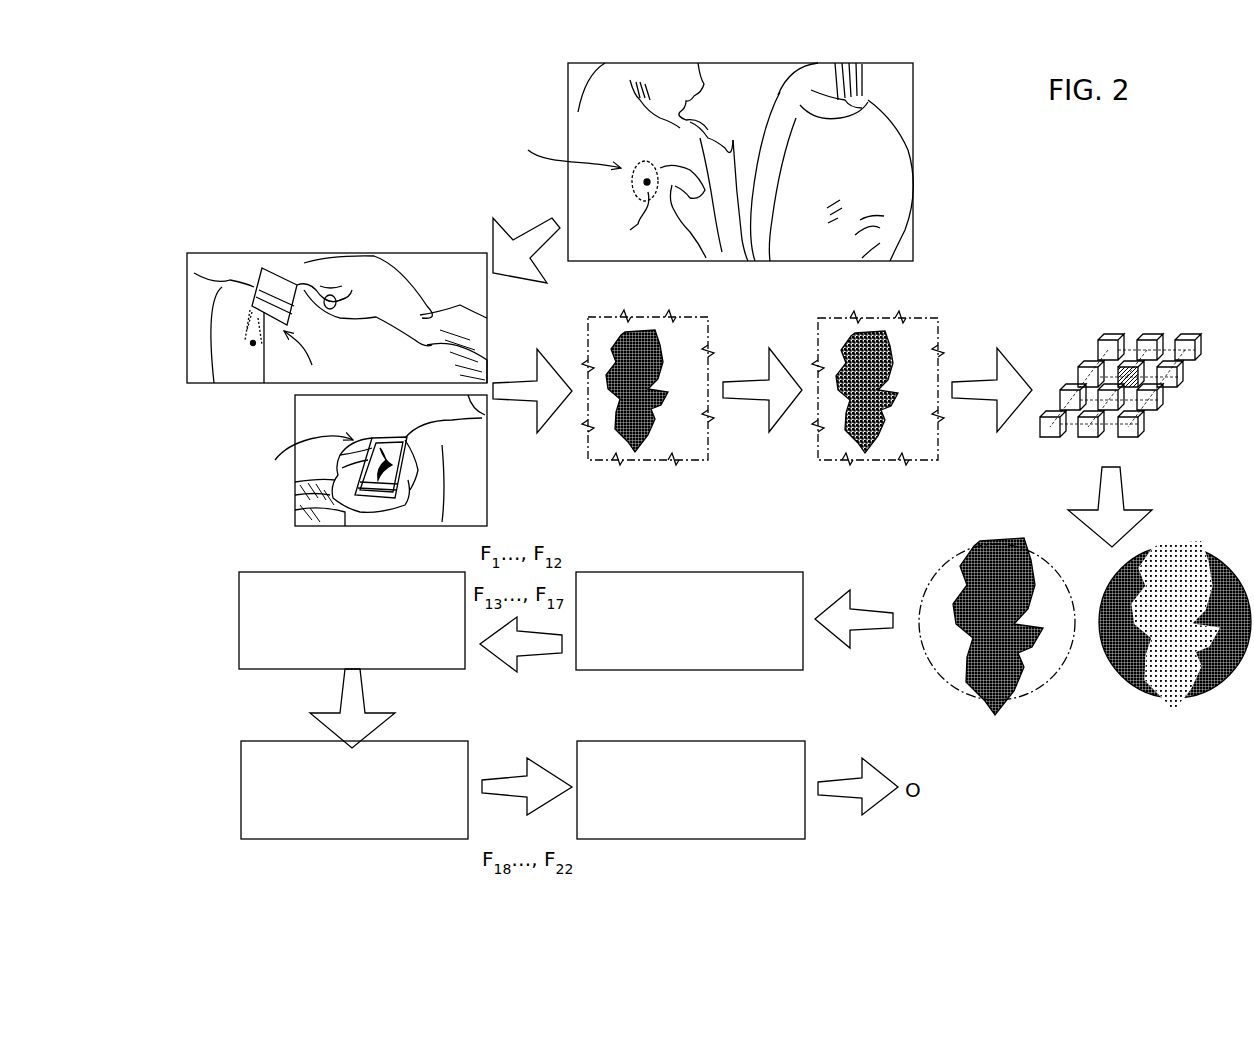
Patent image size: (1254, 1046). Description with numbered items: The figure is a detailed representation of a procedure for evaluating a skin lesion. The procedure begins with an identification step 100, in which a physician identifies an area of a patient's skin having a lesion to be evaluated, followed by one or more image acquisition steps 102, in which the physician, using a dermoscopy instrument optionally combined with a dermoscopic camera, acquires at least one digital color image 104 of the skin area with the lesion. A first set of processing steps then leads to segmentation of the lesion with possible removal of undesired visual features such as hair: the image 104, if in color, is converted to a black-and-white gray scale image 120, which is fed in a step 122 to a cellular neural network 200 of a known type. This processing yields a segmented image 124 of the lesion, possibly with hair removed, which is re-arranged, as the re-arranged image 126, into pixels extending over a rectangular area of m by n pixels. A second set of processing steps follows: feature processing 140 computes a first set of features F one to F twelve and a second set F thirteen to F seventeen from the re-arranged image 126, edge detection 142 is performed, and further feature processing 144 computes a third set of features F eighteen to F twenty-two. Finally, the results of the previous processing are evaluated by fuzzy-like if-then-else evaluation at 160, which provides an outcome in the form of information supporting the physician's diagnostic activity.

The identification step 100 is at (931, 101).
The image acquisition steps 102 is at (281, 229).
The image 104 is at (641, 472).
The gray scale image 120 is at (876, 472).
The cellular neural network feeding step 122 is at (1138, 352).
The cellular neural network 200 is at (1116, 340).
The segmented image 124 is at (1202, 717).
The re-arranged image 126 is at (991, 720).
The feature processing block 140 is at (720, 582).
The edge detection 142 is at (255, 622).
The further feature processing block 144 is at (265, 808).
The evaluation step 160 is at (718, 750).